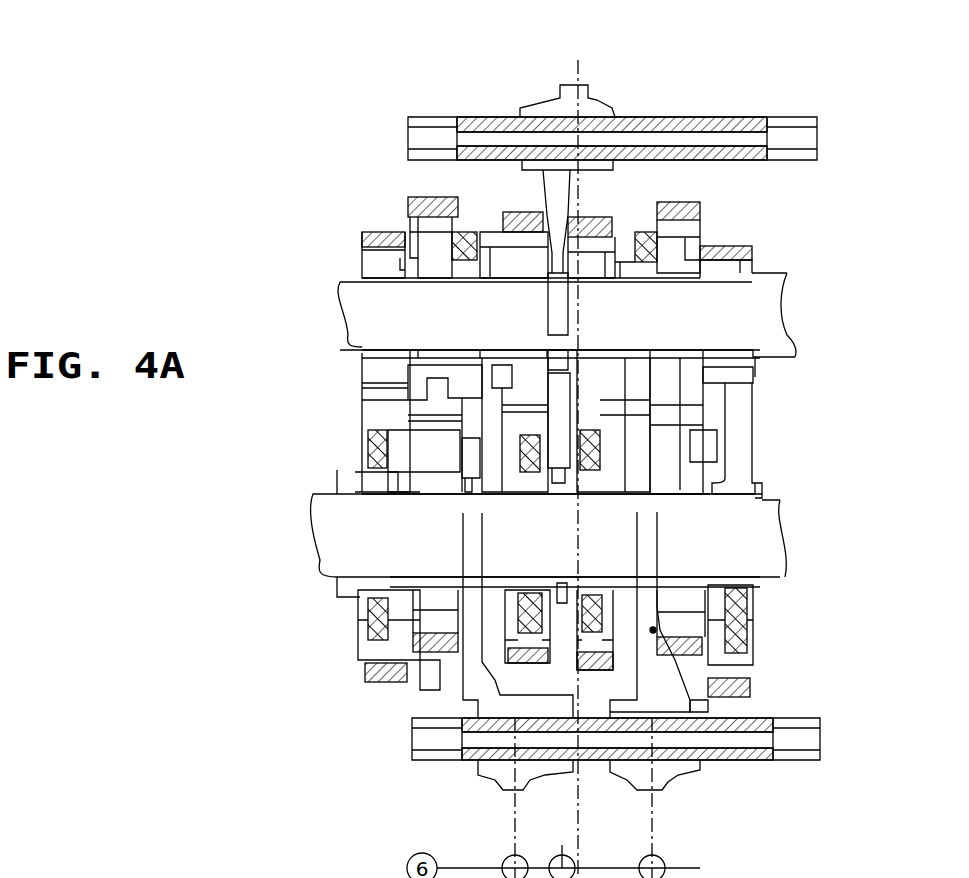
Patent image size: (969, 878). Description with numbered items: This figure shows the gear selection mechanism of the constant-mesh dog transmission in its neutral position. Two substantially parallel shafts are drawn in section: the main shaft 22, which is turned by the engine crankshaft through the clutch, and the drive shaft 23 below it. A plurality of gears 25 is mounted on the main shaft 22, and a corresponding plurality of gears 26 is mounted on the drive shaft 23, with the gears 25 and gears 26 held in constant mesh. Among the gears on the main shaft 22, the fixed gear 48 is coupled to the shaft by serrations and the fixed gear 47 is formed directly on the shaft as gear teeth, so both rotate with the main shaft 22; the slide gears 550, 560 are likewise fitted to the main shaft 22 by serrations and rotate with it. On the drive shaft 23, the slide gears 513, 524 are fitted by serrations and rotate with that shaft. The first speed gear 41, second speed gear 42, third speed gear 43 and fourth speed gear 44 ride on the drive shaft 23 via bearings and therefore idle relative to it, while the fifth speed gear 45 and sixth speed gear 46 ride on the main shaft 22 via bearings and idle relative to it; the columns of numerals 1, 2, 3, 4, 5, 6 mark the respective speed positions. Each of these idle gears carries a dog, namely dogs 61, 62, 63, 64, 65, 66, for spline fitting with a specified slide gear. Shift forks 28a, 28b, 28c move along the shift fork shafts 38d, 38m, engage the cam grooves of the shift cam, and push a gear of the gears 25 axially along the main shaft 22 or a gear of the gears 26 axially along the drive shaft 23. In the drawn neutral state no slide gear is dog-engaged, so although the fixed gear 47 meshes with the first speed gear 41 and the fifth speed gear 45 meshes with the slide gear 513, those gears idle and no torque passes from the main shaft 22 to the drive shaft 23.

The main shaft 22 is at (340, 290).
The drive shaft 23 is at (320, 510).
The gears 25 is at (292, 239).
The gears 26 is at (262, 655).
The shift fork 28a is at (670, 770).
The shift fork 28b is at (588, 88).
The shift fork 28c is at (497, 787).
The shift fork shaft 38m is at (817, 118).
The shift fork shaft 38d is at (820, 720).
The first speed gear 41 is at (750, 680).
The second speed gear 42 is at (373, 687).
The third speed gear 43 is at (690, 656).
The fourth speed gear 44 is at (520, 665).
The fifth speed gear 45 is at (700, 207).
The sixth speed gear 46 is at (410, 198).
The fixed gear 47 is at (752, 248).
The fixed gear 48 is at (368, 232).
The dog 61 is at (747, 647).
The dog 62 is at (365, 622).
The dog 63 is at (655, 640).
The dog 64 is at (458, 655).
The dog 65 is at (700, 203).
The dog 66 is at (497, 240).
The slide gear 513 is at (688, 713).
The slide gear 524 is at (428, 655).
The slide gear 550 is at (608, 216).
The slide gear 560 is at (510, 212).
The first speed gear 1 is at (562, 446).
The second speed gear 2 is at (557, 437).
The third speed gear 3 is at (613, 441).
The fourth speed gear 4 is at (515, 441).
The fifth speed gear 5 is at (683, 441).
The sixth speed gear 6 is at (435, 445).